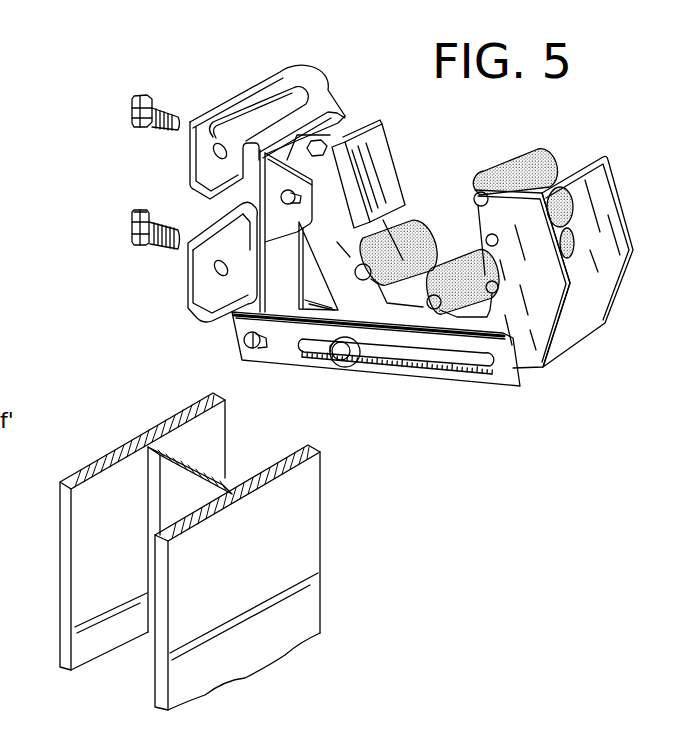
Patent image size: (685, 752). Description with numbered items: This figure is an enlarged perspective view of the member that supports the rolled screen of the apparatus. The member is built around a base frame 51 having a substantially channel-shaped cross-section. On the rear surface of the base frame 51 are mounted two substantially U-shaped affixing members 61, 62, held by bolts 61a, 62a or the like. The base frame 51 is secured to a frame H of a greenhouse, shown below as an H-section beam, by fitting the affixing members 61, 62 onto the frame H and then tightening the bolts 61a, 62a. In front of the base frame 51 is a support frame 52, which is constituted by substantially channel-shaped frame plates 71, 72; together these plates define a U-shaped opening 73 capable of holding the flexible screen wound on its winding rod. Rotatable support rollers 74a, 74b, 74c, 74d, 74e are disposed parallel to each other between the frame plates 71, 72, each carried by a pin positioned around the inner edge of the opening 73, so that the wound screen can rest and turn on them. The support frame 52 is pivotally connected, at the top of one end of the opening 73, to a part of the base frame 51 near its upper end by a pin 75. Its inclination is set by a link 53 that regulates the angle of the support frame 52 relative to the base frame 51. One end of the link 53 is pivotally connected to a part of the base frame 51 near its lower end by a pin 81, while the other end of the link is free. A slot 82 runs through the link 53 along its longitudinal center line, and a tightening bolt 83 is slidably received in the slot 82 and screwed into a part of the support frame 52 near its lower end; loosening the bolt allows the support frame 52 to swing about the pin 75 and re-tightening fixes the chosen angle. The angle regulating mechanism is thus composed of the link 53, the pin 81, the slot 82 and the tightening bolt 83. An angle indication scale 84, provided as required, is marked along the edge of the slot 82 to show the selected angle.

The base frame 51 is at (258, 232).
The support frame 52 is at (576, 278).
The link 53 is at (376, 366).
The affixing member 61 is at (245, 88).
The bolt 61a is at (138, 97).
The affixing member 62 is at (208, 278).
The bolt 62a is at (132, 222).
The frame plate 71 is at (543, 333).
The frame plate 72 is at (610, 216).
The U-shaped opening 73 is at (468, 167).
The support roller 74a is at (529, 146).
The support roller 74b is at (563, 196).
The support roller 74c is at (567, 259).
The support roller 74d is at (470, 258).
The support roller 74e is at (430, 220).
The pin 75 is at (283, 193).
The pin 81 is at (253, 350).
The slot 82 is at (428, 367).
The tightening bolt 83 is at (340, 362).
The angle indication scale 84 is at (388, 372).
The frame H is at (310, 547).